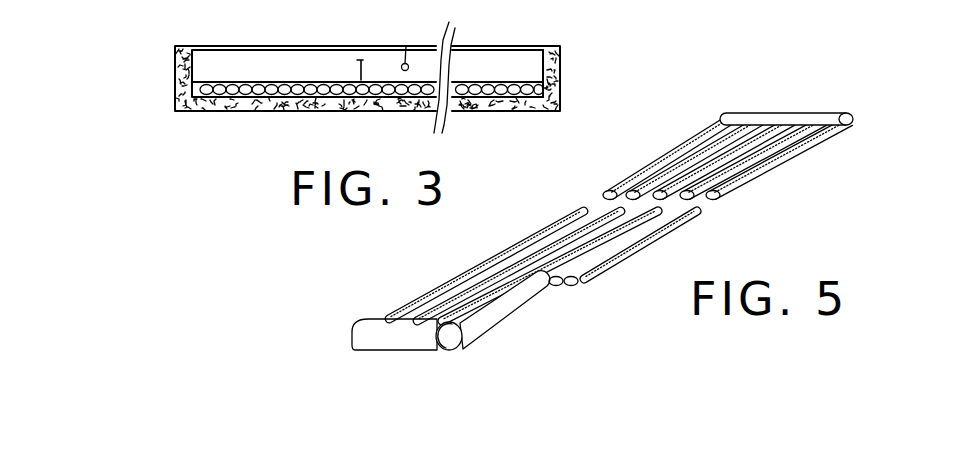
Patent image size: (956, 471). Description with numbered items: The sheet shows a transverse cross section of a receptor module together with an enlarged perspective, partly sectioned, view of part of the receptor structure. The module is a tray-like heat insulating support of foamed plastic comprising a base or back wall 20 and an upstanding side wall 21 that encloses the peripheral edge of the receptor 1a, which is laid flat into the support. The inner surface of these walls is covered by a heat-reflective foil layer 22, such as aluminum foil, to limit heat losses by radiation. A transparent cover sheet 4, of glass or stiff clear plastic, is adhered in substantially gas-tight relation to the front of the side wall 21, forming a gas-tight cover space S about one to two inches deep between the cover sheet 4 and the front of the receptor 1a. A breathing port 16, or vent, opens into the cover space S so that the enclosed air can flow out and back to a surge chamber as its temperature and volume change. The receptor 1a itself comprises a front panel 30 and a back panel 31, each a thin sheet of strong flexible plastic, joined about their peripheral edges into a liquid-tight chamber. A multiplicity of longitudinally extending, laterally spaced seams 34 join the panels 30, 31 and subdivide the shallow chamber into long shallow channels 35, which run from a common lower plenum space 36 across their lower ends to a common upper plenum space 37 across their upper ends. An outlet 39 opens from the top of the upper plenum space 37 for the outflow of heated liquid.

In FIG. 3, the transparent cover sheet 4 is at (218, 46).
In FIG. 3, the receptor 1a is at (278, 62).
In FIG. 3, the outlet 39 is at (361, 66).
In FIG. 3, the breathing port 16 is at (406, 46).
In FIG. 3, the cover space S is at (487, 62).
In FIG. 3, the heat-reflective foil layer 22 is at (524, 62).
In FIG. 3, the upper plenum space 37 is at (514, 80).
In FIG. 5, the upper plenum space 37 is at (800, 118).
In FIG. 3, the side wall 21 is at (177, 79).
In FIG. 3, the channels 35 is at (217, 92).
In FIG. 5, the channels 35 is at (713, 199).
In FIG. 3, the back wall 20 is at (310, 103).
In FIG. 5, the front panel 30 is at (632, 190).
In FIG. 5, the seams 34 is at (552, 247).
In FIG. 5, the back panel 31 is at (540, 283).
In FIG. 5, the lower plenum space 36 is at (367, 328).